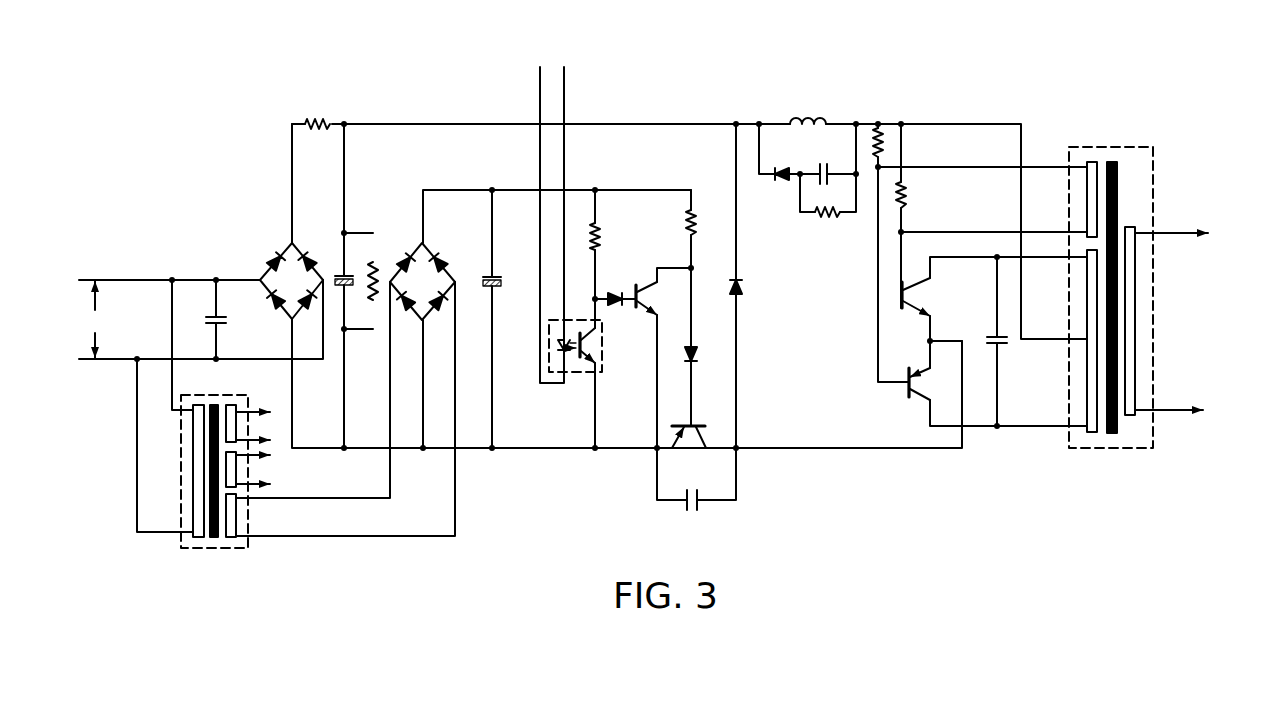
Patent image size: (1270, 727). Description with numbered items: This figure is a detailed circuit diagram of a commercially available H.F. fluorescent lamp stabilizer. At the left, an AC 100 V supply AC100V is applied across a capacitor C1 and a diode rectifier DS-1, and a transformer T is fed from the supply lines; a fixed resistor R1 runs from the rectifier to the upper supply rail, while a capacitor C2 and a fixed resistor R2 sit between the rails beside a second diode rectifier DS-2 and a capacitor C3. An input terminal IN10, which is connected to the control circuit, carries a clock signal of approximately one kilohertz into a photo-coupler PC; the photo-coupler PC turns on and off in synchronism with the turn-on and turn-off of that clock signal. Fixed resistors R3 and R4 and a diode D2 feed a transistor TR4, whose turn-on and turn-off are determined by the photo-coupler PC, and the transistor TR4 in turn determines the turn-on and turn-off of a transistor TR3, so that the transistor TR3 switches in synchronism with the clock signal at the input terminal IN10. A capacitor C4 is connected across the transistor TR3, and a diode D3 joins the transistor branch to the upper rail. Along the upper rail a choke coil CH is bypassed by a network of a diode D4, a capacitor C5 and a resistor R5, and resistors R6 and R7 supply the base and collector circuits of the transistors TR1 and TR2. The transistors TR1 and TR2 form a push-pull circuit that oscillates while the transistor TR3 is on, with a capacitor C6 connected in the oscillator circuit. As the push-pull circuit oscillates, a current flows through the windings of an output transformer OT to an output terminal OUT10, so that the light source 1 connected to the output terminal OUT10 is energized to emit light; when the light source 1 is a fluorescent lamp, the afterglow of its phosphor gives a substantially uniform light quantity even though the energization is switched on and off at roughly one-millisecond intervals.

The AC 100 V power supply AC100V is at (121, 319).
The input terminal IN10 is at (554, 212).
The fixed resistor R1 is at (319, 118).
The diode rectifier DS-1 is at (263, 268).
The capacitor C1 is at (226, 318).
The capacitor C2 is at (336, 273).
The fixed resistor R2 is at (378, 263).
The diode rectifier DS-2 is at (458, 245).
The capacitor C3 is at (499, 278).
The transformer T is at (230, 550).
The fixed resistor R3 is at (602, 236).
The fixed resistor R4 is at (688, 222).
The diode D2 is at (615, 291).
The transistor TR4 is at (641, 316).
The photo-coupler PC is at (603, 367).
The diode D3 is at (746, 282).
The transistor TR3 is at (684, 440).
The capacitor C4 is at (695, 508).
The choke coil CH is at (817, 117).
The capacitor C5 is at (826, 163).
The diode D4 is at (785, 181).
The resistor R5 is at (822, 219).
The resistor R6 is at (884, 140).
The resistor R7 is at (906, 195).
The transistor TR1 is at (925, 293).
The transistor TR2 is at (918, 398).
The capacitor C6 is at (1010, 341).
The output transformer OT is at (1136, 147).
The output terminal OUT10 is at (1190, 321).
The light source 1 is at (1211, 264).